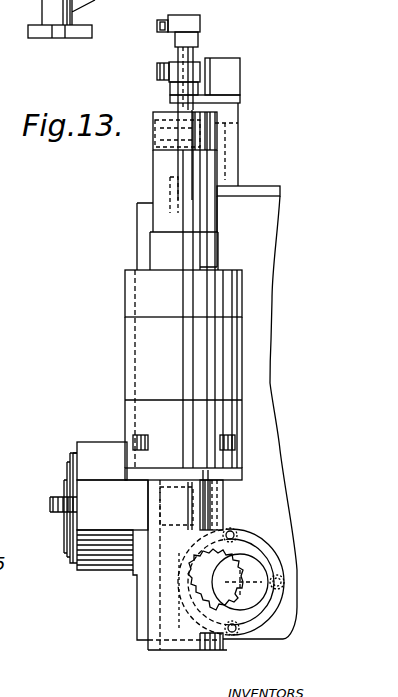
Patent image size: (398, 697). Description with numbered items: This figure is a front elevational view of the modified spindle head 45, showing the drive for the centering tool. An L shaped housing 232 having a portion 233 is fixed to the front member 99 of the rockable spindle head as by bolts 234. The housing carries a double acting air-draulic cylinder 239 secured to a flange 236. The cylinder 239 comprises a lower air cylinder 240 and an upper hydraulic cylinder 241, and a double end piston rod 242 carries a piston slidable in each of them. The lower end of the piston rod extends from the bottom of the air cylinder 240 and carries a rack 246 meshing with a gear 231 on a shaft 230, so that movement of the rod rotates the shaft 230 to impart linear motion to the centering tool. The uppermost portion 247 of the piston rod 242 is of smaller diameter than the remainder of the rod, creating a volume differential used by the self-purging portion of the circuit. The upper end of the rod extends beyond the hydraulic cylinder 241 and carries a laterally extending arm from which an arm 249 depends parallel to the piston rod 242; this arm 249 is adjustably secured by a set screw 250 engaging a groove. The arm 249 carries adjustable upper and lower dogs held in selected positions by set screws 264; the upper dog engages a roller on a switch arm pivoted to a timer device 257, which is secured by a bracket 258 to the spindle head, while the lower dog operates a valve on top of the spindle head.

The arm 249 is at (200, 18).
The set screw 250 is at (160, 26).
The uppermost portion of the piston rod 247 is at (192, 57).
The set screws 264 is at (157, 72).
The double end piston rod 242 is at (180, 89).
The timer device 257 is at (230, 72).
The bracket 258 is at (240, 97).
The upper hydraulic cylinder 241 is at (158, 173).
The front member 99 is at (260, 222).
The feed drive housing 45 is at (272, 336).
The double acting air-draulic cylinder 239 is at (126, 304).
The lower air cylinder 240 is at (132, 362).
The flange 236 is at (238, 472).
The rack 246 is at (173, 543).
The L shaped housing 232 is at (131, 609).
The shaft 230 is at (284, 566).
The gear 231 is at (277, 533).
The portion of the housing 233 is at (267, 600).
The bolts 234 is at (252, 523).